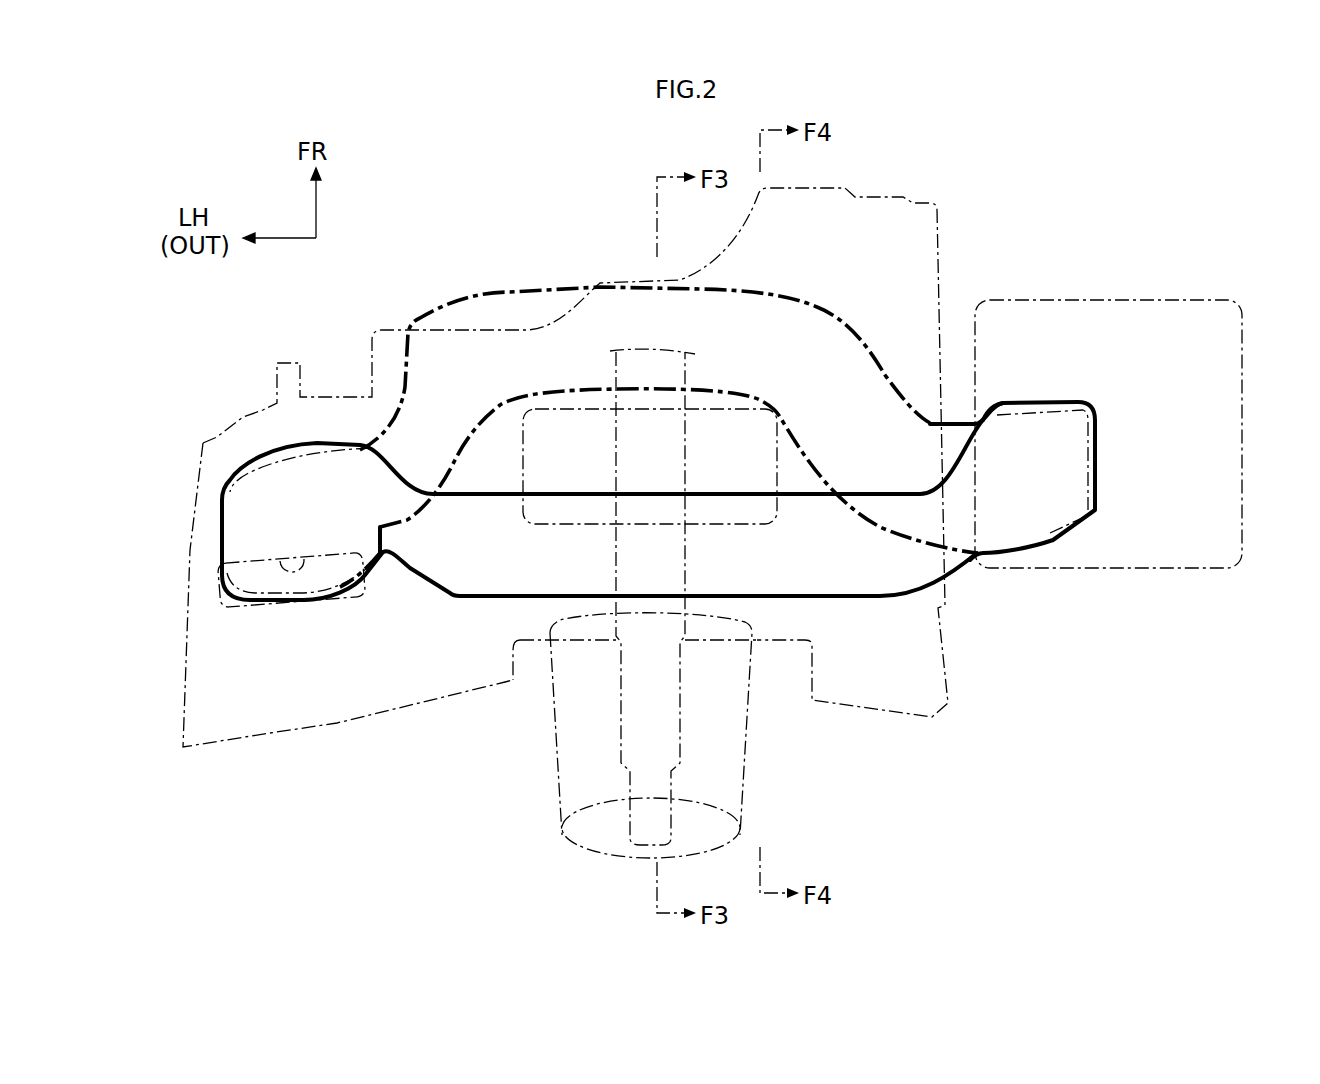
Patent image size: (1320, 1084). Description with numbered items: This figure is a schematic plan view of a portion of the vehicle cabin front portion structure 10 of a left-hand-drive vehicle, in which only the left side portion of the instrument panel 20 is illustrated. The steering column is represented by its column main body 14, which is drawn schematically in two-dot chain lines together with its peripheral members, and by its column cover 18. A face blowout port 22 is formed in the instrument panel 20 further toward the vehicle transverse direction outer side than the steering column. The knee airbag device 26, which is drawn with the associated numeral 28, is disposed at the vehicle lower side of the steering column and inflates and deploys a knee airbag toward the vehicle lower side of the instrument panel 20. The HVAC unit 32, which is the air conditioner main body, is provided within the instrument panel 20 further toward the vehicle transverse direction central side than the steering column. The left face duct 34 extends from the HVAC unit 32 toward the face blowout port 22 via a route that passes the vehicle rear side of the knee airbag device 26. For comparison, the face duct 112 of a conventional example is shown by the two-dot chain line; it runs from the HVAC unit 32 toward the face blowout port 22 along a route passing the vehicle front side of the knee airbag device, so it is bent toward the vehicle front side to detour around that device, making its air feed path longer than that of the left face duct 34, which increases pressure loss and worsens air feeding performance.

The vehicle cabin front portion structure 10 is at (474, 846).
The column main body 14 is at (616, 549).
The column cover 18 is at (557, 750).
The instrument panel 20 is at (337, 722).
The face blowout port 22 is at (303, 564).
The knee airbag device 26 is at (685, 489).
The attachment portion 28 is at (740, 524).
The HVAC unit 32 is at (1085, 300).
The left face duct 34 is at (485, 598).
The face duct 112 is at (526, 290).